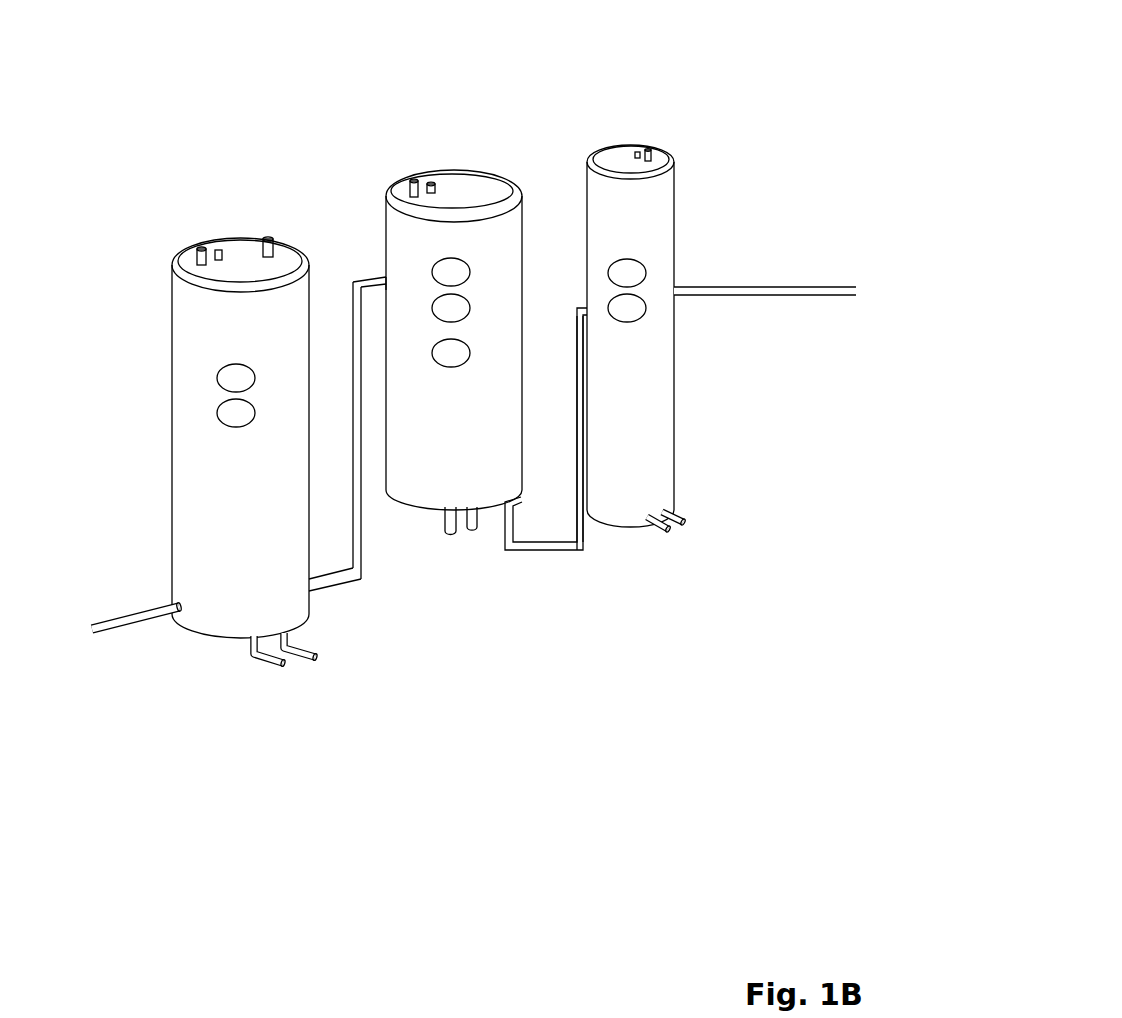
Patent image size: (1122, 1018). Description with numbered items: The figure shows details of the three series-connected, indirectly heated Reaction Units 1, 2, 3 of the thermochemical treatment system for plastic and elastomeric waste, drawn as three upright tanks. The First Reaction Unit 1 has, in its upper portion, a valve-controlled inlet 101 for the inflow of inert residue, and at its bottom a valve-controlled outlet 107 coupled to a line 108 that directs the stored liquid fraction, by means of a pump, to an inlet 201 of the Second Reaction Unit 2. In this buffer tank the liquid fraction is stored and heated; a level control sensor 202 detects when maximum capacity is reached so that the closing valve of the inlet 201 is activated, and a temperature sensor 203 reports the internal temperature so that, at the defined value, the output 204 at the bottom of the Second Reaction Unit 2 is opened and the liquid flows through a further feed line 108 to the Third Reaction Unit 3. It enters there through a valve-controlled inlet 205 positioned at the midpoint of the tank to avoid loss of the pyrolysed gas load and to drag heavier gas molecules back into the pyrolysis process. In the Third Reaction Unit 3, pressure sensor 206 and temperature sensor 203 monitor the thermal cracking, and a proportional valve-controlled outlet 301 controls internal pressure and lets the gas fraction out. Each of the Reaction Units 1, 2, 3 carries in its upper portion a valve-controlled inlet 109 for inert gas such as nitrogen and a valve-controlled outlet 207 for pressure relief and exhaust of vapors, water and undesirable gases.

The First Reaction Unit 1 is at (201, 633).
The Second Reaction Unit 2 is at (422, 505).
The Third Reaction Unit 3 is at (603, 523).
The valve-controlled inlet 101 is at (268, 237).
The valve-controlled outlet 107 is at (312, 654).
The line 108 is at (359, 281).
The valve-controlled inlet 109 is at (201, 247).
The inlet 201 is at (389, 417).
The level control sensor 202 is at (451, 353).
The temperature sensor 203 is at (431, 360).
The output 204 is at (479, 609).
The valve-controlled inlet 205 is at (578, 310).
The pressure sensor 206 is at (431, 325).
The valve-controlled outlet 207 is at (223, 250).
The proportional valve-controlled outlet 301 is at (675, 297).